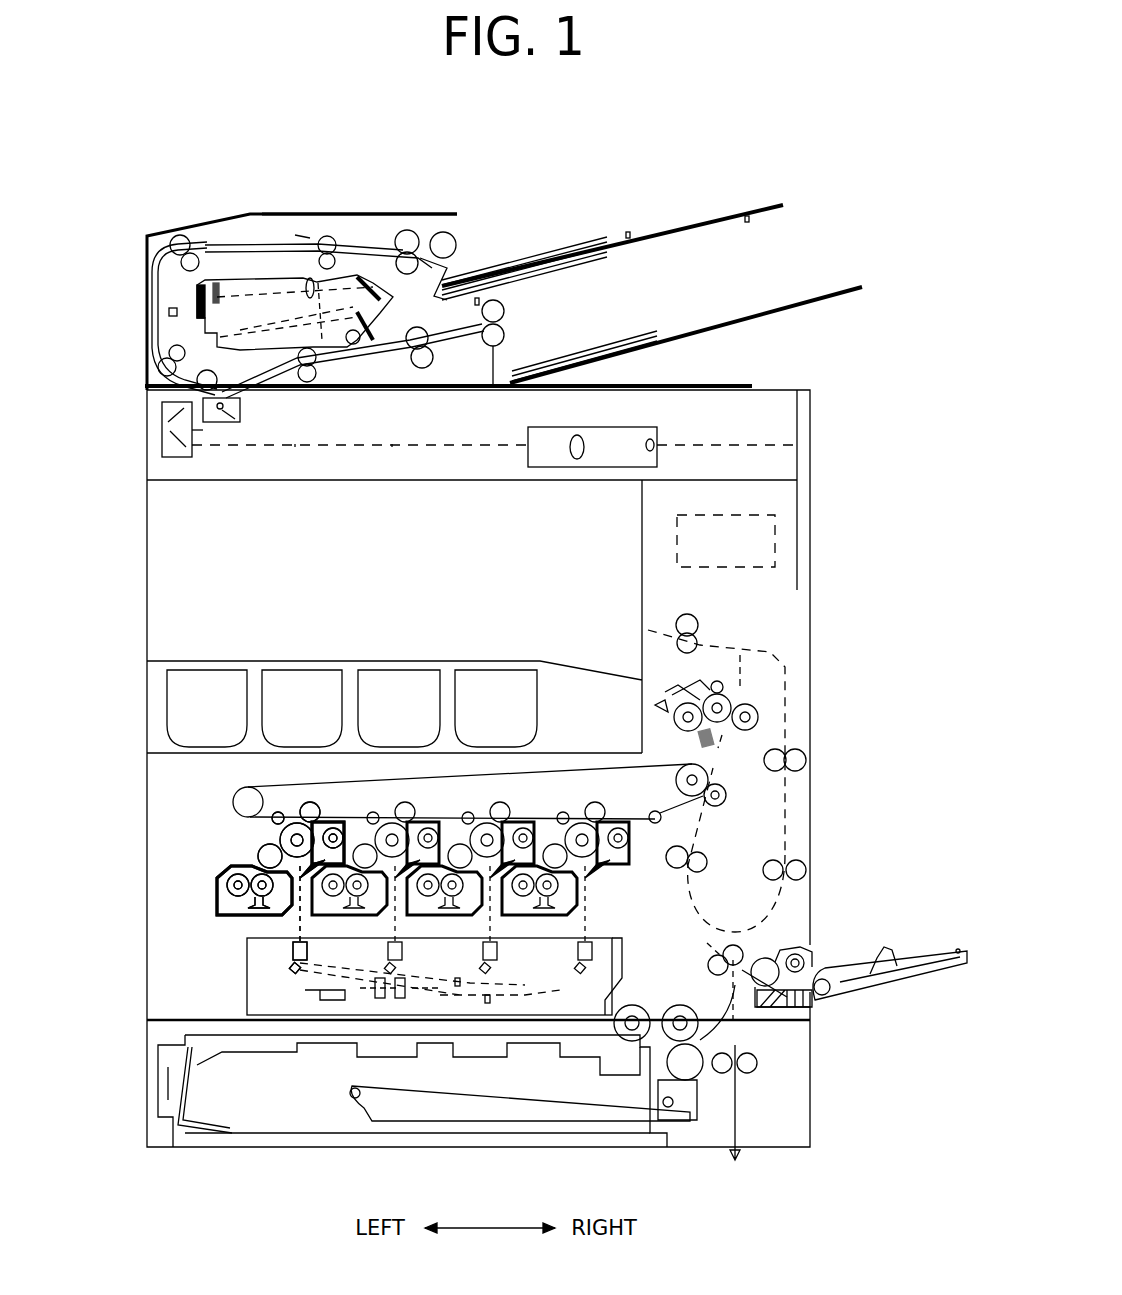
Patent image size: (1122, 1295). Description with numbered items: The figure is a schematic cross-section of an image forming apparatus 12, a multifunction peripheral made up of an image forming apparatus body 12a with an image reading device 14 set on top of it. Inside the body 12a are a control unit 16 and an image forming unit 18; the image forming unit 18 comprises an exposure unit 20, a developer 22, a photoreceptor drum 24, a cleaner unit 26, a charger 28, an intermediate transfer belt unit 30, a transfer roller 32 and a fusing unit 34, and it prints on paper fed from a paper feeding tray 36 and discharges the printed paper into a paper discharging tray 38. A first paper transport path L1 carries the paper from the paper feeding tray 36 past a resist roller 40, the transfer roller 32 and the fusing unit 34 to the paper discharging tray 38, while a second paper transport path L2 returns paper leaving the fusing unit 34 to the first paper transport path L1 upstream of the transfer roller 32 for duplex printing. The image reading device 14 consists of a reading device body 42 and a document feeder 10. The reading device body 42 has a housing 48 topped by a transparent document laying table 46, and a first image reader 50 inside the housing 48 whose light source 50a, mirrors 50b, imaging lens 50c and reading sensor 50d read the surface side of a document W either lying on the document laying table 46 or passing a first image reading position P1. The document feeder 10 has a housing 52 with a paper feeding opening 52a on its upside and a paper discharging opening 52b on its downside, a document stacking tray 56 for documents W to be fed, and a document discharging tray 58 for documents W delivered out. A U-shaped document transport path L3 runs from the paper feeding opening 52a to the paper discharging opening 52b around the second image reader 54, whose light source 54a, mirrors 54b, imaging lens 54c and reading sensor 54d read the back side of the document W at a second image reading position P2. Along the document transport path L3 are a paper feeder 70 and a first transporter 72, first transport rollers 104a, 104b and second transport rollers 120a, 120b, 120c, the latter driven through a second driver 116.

The document feeder 10 is at (390, 210).
The image forming apparatus 12 is at (168, 126).
The image forming apparatus body 12a is at (145, 622).
The image reading device 14 is at (143, 238).
The control unit 16 is at (760, 540).
The image forming unit 18 is at (354, 880).
The exposure unit 20 is at (262, 990).
The developer 22 is at (265, 858).
The photoreceptor drum 24 is at (275, 838).
The cleaner unit 26 is at (345, 840).
The charger 28 is at (322, 822).
The intermediate transfer belt unit 30 is at (585, 785).
The transfer roller 32 is at (727, 800).
The fusing unit 34 is at (760, 716).
The paper feeding tray 36 is at (505, 1105).
The paper discharging tray 38 is at (352, 660).
The resist roller 40 is at (700, 860).
The reading device body 42 is at (145, 466).
The document laying table 46 is at (750, 380).
The housing 48 is at (798, 452).
The first image reader 50 is at (662, 448).
The light source 50a is at (212, 420).
The mirrors 50b is at (236, 422).
The imaging lens 50c is at (575, 460).
The reading sensor 50d is at (648, 452).
The housing 52 is at (148, 262).
The paper feeding opening 52a is at (461, 266).
The paper discharging opening 52b is at (510, 321).
The second image reader 54 is at (247, 273).
The light source 54a is at (332, 362).
The mirrors 54b is at (380, 362).
The imaging lens 54c is at (309, 278).
The reading sensor 54d is at (213, 282).
The document stacking tray 56 is at (700, 218).
The document discharging tray 58 is at (790, 298).
The paper feeder 70 is at (427, 228).
The first transporter 72 is at (302, 235).
The first transport roller 104a is at (356, 246).
The first transport roller 104b is at (172, 236).
The second driver 116 is at (330, 400).
The second transport roller 120a is at (150, 330).
The second transport roller 120b is at (287, 380).
The second transport roller 120c is at (396, 308).
The first paper transport path L1 is at (733, 753).
The second paper transport path L2 is at (787, 822).
The document transport path L3 is at (318, 283).
The first image reading position P1 is at (255, 398).
The second image reading position P2 is at (385, 398).
The document W is at (570, 245).